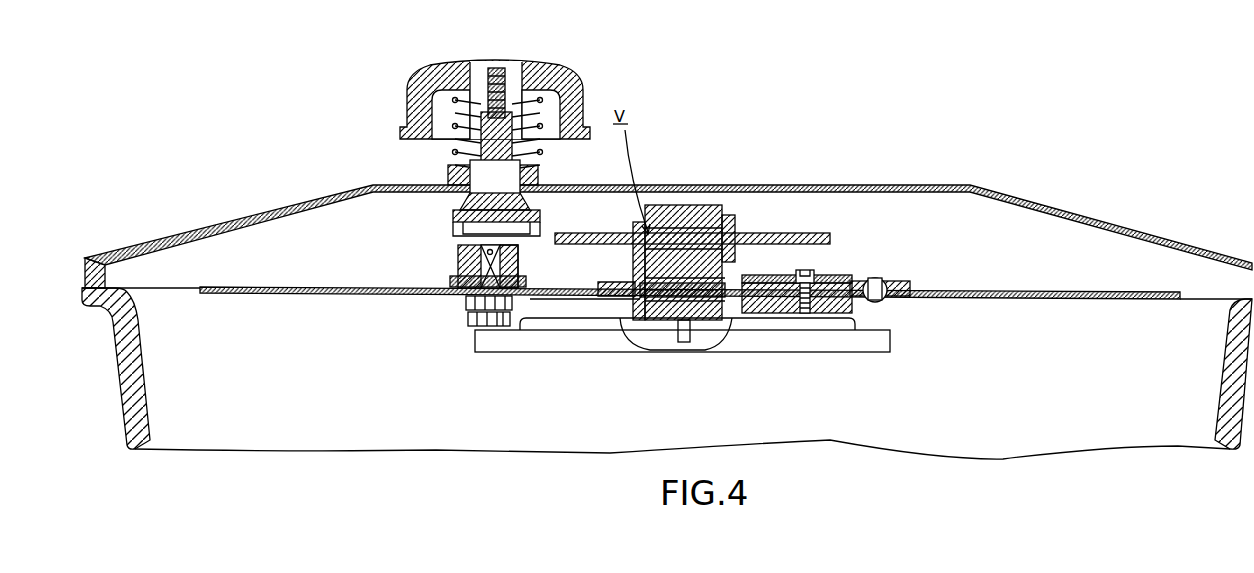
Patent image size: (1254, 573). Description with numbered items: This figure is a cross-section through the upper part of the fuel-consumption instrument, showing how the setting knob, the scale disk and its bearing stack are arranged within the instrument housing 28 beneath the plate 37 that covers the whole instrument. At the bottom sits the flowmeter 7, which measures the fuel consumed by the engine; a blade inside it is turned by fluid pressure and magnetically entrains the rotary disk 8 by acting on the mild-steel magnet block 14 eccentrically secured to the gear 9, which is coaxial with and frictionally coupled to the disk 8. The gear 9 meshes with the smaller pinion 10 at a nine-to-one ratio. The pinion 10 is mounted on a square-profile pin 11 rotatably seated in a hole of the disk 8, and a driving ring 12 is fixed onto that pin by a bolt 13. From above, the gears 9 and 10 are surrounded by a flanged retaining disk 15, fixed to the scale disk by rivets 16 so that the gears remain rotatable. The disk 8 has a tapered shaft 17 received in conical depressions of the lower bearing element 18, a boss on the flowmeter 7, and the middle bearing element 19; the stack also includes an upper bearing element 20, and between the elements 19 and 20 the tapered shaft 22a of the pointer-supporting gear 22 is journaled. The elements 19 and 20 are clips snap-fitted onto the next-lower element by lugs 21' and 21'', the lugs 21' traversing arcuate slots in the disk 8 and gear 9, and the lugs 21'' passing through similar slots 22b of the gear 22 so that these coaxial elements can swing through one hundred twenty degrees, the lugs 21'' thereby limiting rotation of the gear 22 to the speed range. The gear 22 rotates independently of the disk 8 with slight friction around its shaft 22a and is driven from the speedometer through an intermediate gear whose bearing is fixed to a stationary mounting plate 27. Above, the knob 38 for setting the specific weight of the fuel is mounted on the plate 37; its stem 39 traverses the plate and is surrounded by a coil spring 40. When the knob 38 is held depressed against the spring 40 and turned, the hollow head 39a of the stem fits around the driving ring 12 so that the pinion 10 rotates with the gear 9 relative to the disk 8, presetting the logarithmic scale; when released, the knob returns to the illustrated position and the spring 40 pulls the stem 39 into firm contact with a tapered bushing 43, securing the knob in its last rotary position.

The flowmeter 7 is at (784, 326).
The rotary disk 8 is at (213, 294).
The toothed wheel or gear 9 is at (585, 300).
The pinion 10 is at (468, 300).
The square-profile pin 11 is at (483, 336).
The driving ring 12 is at (518, 258).
The bolt 13 is at (460, 252).
The mild-steel magnet block 14 is at (855, 306).
The flanged retaining disk 15 is at (455, 280).
The rivets 16 is at (875, 279).
The tapered shaft 17 is at (702, 332).
The lower bearing element 18 is at (655, 322).
The middle bearing element 19 is at (632, 255).
The upper bearing element 20 is at (690, 215).
The lugs 21' is at (723, 274).
The lugs 21'' is at (720, 212).
The pointer-supporting gear 22 is at (795, 240).
The tapered shaft 22a is at (700, 232).
The arcuate slots 22b is at (642, 226).
The stationary mounting plate 27 is at (862, 346).
The instrument housing 28 is at (148, 438).
The plate 37 is at (240, 222).
The knob 38 is at (425, 95).
The stem 39 is at (485, 157).
The hollow head 39a is at (455, 218).
The coil spring 40 is at (565, 98).
The tapered bushing 43 is at (548, 188).